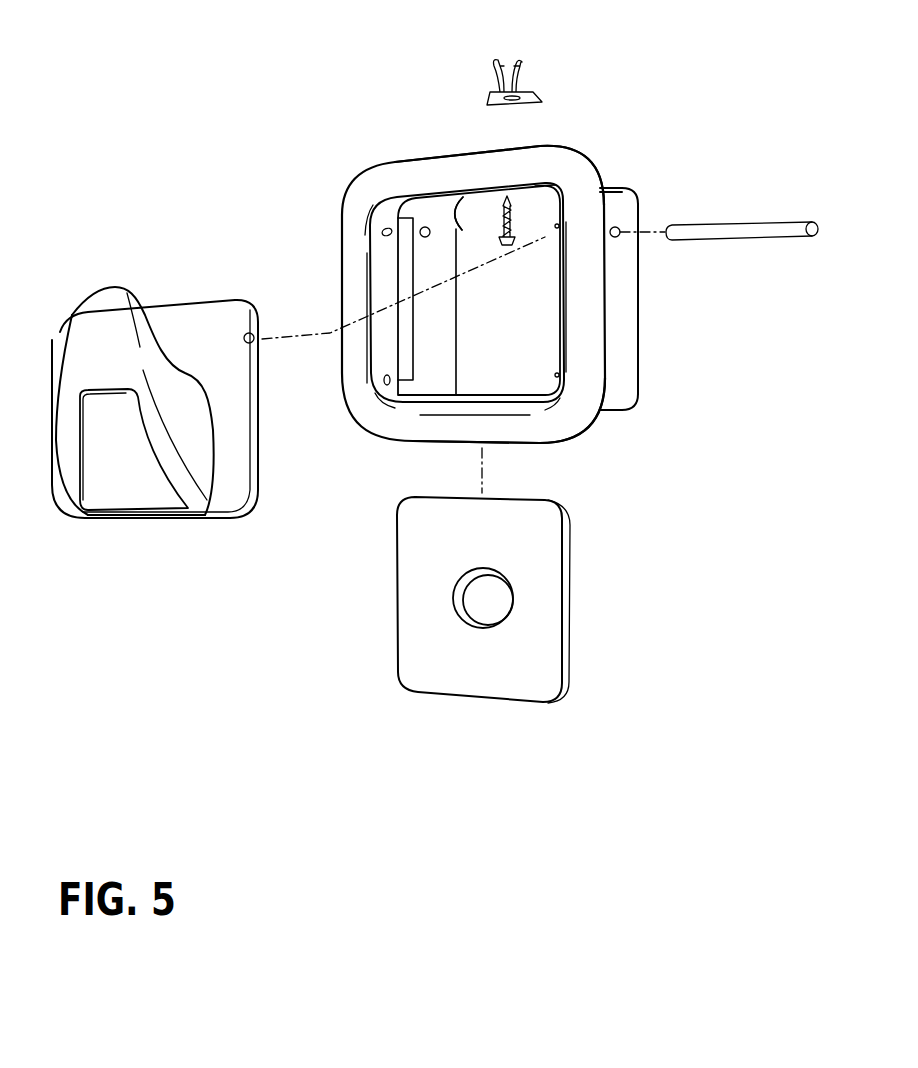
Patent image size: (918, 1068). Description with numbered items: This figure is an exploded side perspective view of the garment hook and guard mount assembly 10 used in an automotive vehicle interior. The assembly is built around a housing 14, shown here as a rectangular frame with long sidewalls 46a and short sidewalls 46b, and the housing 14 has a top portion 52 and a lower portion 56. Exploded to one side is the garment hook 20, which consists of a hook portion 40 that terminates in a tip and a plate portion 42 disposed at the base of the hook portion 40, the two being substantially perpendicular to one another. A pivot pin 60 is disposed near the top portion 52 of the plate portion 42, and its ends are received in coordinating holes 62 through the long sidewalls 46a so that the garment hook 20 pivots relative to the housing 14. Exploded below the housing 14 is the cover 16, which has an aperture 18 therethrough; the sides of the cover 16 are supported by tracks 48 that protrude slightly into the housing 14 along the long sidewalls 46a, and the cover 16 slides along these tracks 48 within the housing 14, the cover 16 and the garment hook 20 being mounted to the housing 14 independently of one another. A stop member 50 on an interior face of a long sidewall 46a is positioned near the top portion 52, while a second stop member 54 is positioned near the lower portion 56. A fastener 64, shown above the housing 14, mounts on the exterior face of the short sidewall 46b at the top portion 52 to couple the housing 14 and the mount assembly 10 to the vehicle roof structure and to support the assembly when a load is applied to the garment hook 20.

The garment hook and guard mount assembly 10 is at (240, 113).
The housing 14 is at (477, 149).
The cover 16 is at (445, 600).
The aperture 18 is at (478, 611).
The garment hook 20 is at (137, 398).
The hook portion 40 is at (110, 287).
The plate portion 42 is at (226, 492).
The sidewalls 46a is at (462, 195).
The sidewalls 46b is at (612, 188).
The track 48 is at (408, 277).
The stop member 50 is at (386, 227).
The top portion 52 is at (533, 143).
The second stop member 54 is at (388, 388).
The lower portion 56 is at (550, 445).
The pivot pin 60 is at (733, 232).
The holes 62 is at (423, 226).
The fastener 64 is at (522, 64).